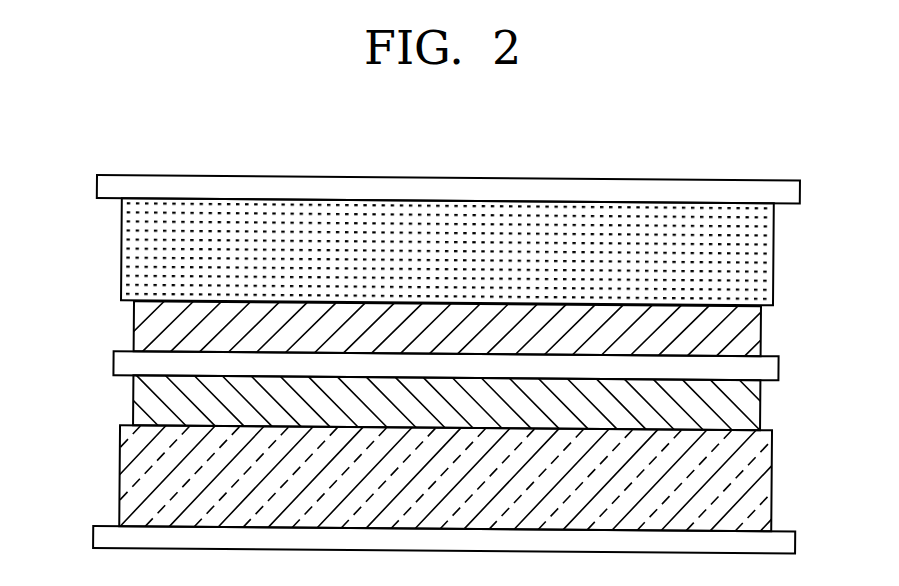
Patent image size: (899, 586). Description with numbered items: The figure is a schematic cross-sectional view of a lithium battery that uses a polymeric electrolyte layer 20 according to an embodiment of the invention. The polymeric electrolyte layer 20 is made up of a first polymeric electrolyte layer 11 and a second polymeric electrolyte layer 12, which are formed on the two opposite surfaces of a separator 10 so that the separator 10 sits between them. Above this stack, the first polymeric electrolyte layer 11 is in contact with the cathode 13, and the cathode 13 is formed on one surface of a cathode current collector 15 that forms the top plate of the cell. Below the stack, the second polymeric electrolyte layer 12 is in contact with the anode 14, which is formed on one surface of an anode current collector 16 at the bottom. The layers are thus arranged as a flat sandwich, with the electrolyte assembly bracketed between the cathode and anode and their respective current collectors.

The separator 10 is at (760, 368).
The first polymeric electrolyte layer 11 is at (742, 329).
The second polymeric electrolyte layer 12 is at (742, 406).
The cathode 13 is at (742, 251).
The anode 14 is at (742, 483).
The cathode current collector 15 is at (780, 190).
The anode current collector 16 is at (780, 543).
The polymeric electrolyte layer 20 is at (449, 366).